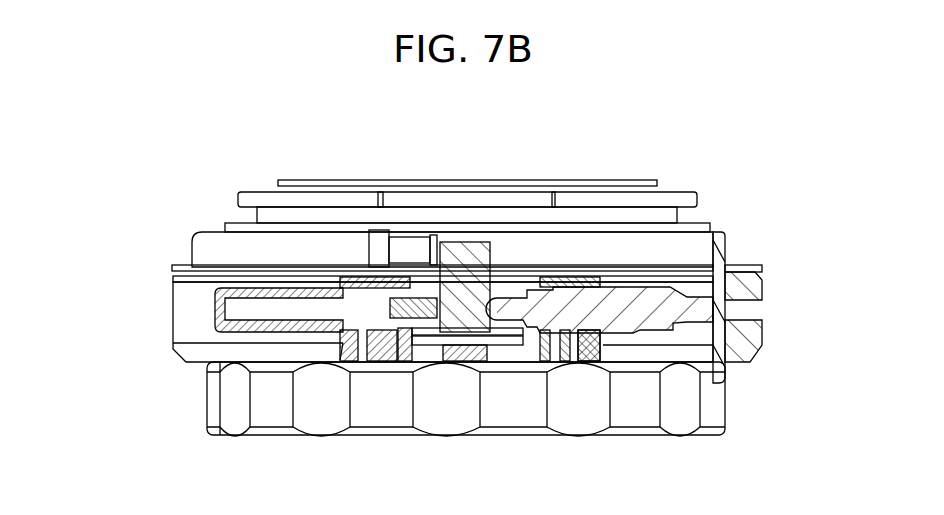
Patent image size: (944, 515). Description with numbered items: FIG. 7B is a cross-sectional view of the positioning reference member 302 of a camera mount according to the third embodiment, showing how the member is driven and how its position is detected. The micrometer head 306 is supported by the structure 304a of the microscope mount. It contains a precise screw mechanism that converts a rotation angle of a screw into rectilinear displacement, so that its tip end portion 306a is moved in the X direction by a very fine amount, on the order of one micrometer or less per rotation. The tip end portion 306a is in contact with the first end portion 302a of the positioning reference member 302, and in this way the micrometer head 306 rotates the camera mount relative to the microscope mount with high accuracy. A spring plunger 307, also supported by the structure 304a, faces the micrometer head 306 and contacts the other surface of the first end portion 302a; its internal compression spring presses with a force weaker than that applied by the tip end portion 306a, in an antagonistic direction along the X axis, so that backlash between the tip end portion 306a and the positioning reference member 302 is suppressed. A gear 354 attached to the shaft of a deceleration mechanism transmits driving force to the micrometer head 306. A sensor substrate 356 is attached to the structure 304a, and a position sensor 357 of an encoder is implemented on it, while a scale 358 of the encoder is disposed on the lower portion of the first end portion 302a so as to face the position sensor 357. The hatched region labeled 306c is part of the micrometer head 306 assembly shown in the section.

The positioning reference member 302 is at (273, 253).
The first end portion 302a is at (465, 265).
The structure 304a is at (327, 357).
The micrometer head 306 is at (633, 300).
The tip end portion 306a is at (511, 297).
The flange portion 306c is at (718, 238).
The spring plunger 307 is at (213, 282).
The gear 354 is at (740, 323).
The sensor substrate 356 is at (523, 353).
The position sensor 357 is at (462, 350).
The scale 358 is at (433, 263).